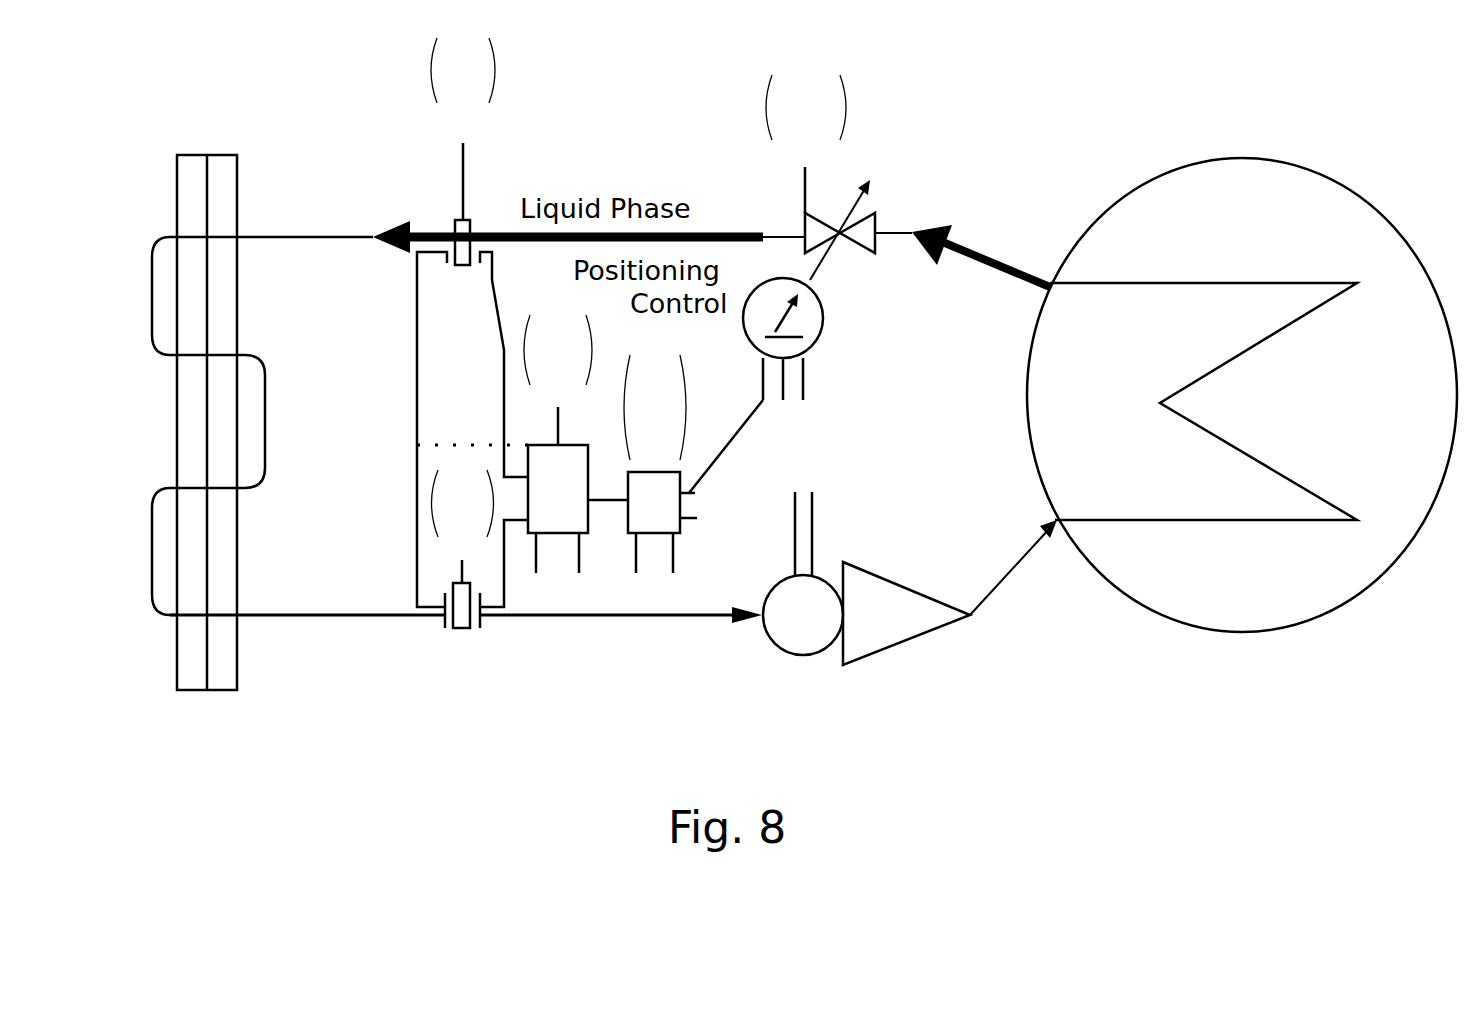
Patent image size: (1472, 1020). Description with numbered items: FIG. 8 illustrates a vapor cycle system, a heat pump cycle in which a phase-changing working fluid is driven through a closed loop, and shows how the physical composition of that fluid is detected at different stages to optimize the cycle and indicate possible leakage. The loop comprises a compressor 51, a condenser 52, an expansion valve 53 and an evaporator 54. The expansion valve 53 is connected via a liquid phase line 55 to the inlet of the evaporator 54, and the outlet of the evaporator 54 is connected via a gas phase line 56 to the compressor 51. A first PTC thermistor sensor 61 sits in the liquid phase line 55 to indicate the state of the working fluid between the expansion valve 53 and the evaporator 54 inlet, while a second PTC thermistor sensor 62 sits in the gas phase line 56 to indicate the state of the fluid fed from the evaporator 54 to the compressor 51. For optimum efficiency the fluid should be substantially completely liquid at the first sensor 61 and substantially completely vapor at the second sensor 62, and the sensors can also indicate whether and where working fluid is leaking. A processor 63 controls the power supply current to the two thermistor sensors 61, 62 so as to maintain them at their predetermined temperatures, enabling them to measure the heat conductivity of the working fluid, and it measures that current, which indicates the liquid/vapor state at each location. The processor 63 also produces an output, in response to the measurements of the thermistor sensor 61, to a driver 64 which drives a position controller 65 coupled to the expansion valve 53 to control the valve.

The compressor 51 is at (880, 633).
The condenser 52 is at (1283, 160).
The expansion valve 53 is at (838, 212).
The evaporator 54 is at (190, 180).
The liquid phase line 55 is at (497, 232).
The gas phase line 56 is at (693, 622).
The first PTC thermistor sensor 61 is at (461, 220).
The second PTC thermistor sensor 62 is at (456, 632).
The processor 63 is at (533, 445).
The driver 64 is at (700, 518).
The position controller 65 is at (823, 325).